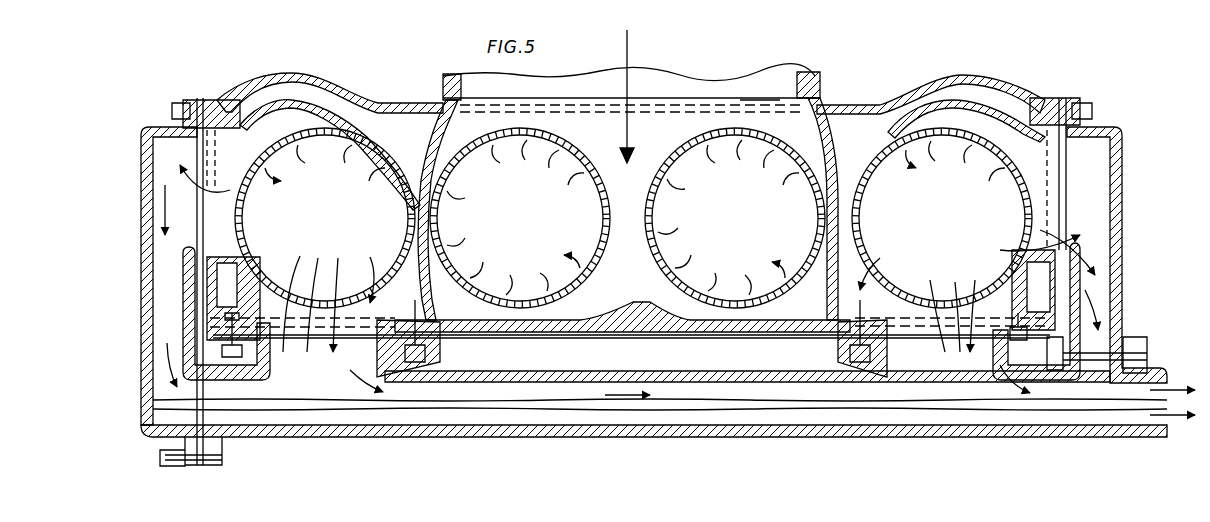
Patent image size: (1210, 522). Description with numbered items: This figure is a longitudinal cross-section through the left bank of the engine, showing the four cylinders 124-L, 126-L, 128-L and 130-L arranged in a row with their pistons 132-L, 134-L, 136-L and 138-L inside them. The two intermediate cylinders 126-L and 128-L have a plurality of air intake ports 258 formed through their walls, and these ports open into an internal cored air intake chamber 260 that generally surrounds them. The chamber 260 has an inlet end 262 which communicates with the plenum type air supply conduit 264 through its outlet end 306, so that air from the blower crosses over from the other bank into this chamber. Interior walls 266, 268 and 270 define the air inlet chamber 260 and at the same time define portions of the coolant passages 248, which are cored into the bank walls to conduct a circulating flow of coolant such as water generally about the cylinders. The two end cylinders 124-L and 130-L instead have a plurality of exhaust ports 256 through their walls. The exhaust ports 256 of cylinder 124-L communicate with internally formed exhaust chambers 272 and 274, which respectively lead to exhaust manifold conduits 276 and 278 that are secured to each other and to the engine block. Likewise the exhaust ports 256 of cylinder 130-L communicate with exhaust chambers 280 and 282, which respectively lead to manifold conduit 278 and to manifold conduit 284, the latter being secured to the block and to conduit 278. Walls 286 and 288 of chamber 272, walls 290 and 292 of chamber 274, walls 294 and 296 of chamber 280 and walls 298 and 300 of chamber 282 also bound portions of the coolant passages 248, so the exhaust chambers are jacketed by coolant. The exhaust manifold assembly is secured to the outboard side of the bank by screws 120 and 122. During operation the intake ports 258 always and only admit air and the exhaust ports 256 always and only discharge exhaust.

The screws 120 is at (420, 377).
The screws 122 is at (252, 380).
The cylinder 124-L is at (325, 218).
The cylinder 126-L is at (442, 237).
The cylinder 128-L is at (835, 212).
The cylinder 130-L is at (860, 182).
The piston 132-L is at (348, 203).
The piston 134-L is at (538, 212).
The piston 136-L is at (735, 218).
The piston 138-L is at (972, 225).
The coolant passages 248 is at (283, 74).
The exhaust ports 256 is at (252, 183).
The air intake ports 258 is at (623, 217).
The air intake chamber 260 is at (683, 133).
The inlet end 262 is at (556, 100).
The air supply conduit 264 is at (447, 75).
The interior wall 266 is at (440, 126).
The interior wall 268 is at (478, 322).
The interior wall 270 is at (822, 77).
The exhaust chamber 272 is at (248, 164).
The exhaust chamber 274 is at (380, 330).
The exhaust manifold conduit 276 is at (150, 247).
The exhaust manifold conduit 278 is at (388, 438).
The exhaust chamber 280 is at (960, 330).
The exhaust chamber 282 is at (1050, 155).
The exhaust manifold conduit 284 is at (1124, 152).
The wall 286 is at (283, 110).
The wall 288 is at (213, 238).
The wall 290 is at (340, 340).
The wall 292 is at (374, 269).
The wall 294 is at (887, 262).
The wall 296 is at (1010, 341).
The wall 298 is at (1062, 240).
The wall 300 is at (1007, 127).
The outlet end 306 is at (752, 100).